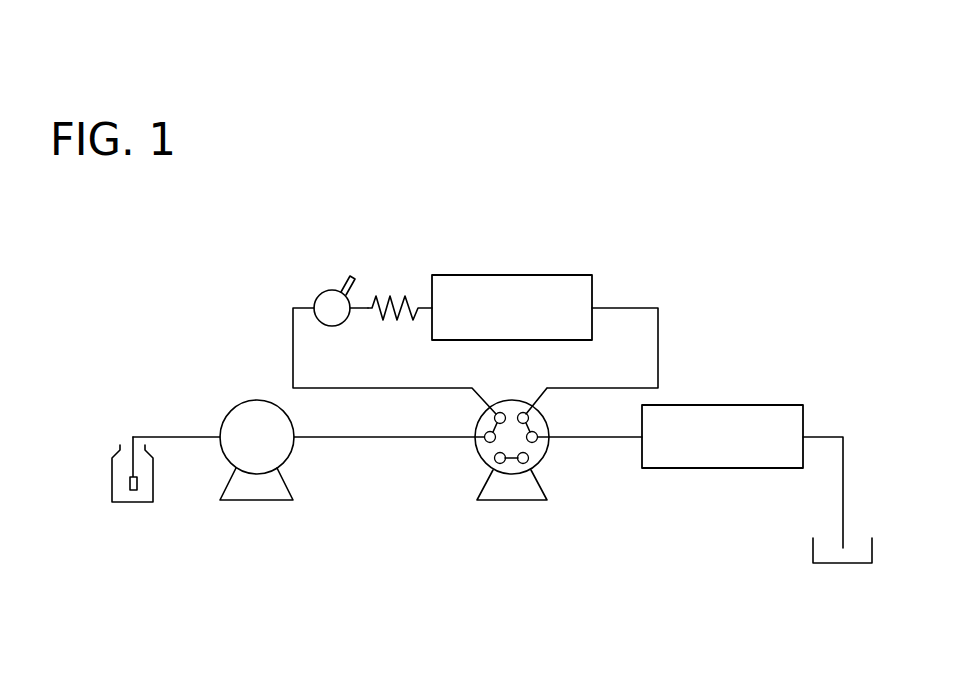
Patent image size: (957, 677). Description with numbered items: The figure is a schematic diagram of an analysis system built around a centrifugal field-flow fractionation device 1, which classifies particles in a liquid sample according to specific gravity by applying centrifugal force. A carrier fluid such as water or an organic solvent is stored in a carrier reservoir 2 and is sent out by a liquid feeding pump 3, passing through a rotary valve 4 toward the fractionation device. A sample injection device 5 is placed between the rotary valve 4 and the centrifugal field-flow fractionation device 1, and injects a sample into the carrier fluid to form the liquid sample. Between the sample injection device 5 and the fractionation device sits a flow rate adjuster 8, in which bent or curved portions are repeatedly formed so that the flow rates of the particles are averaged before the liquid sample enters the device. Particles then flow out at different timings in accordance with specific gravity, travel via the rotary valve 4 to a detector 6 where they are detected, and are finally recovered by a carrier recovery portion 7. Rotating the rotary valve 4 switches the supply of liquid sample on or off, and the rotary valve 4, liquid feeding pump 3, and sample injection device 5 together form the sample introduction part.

The centrifugal field-flow fractionation device 1 is at (530, 275).
The carrier reservoir 2 is at (135, 503).
The liquid feeding pump 3 is at (272, 503).
The rotary valve 4 is at (481, 466).
The sample injection device 5 is at (316, 296).
The detector 6 is at (745, 405).
The carrier recovery portion 7 is at (830, 563).
The flow rate adjuster 8 is at (404, 307).